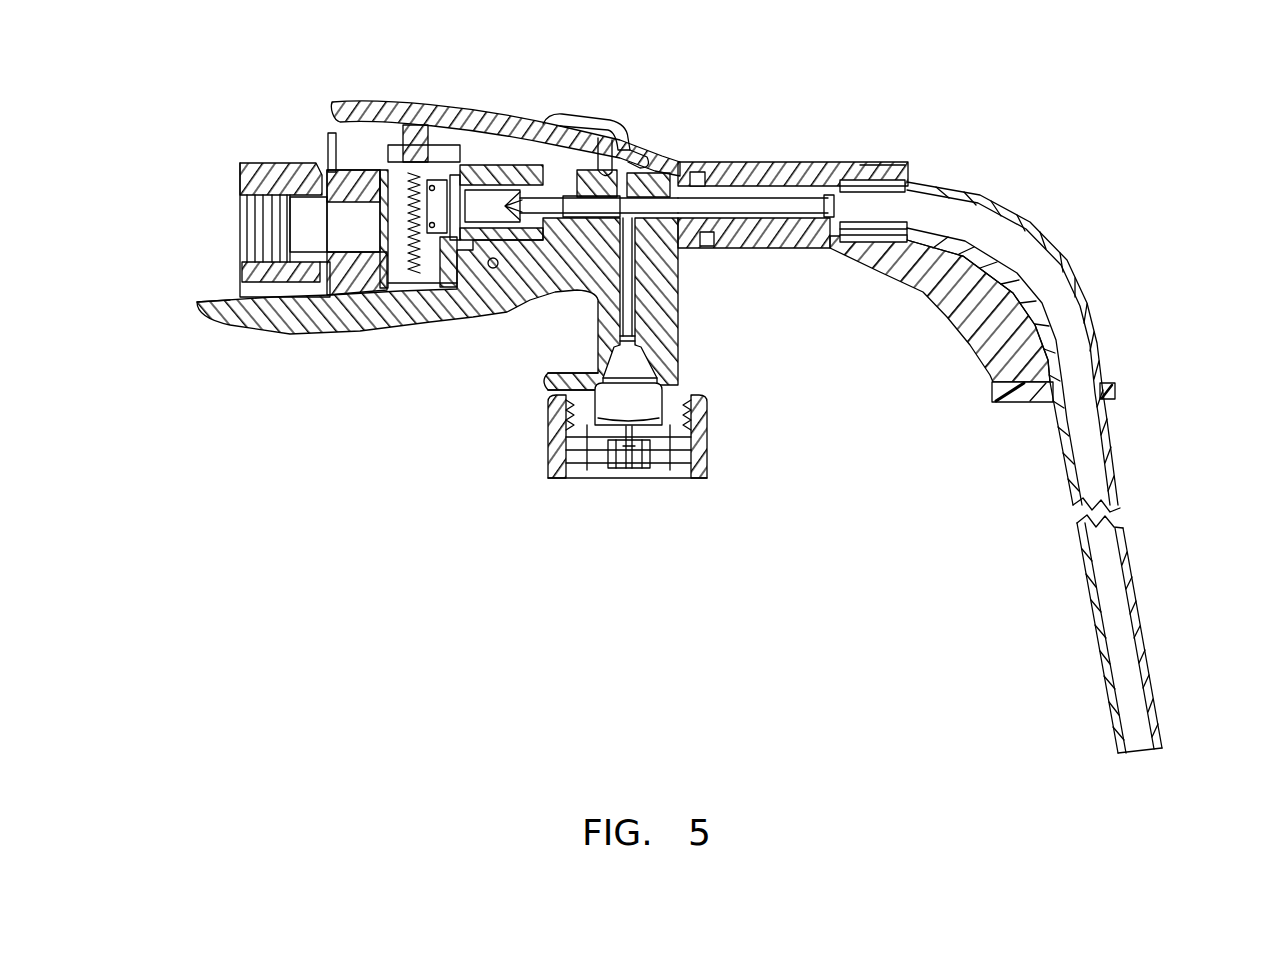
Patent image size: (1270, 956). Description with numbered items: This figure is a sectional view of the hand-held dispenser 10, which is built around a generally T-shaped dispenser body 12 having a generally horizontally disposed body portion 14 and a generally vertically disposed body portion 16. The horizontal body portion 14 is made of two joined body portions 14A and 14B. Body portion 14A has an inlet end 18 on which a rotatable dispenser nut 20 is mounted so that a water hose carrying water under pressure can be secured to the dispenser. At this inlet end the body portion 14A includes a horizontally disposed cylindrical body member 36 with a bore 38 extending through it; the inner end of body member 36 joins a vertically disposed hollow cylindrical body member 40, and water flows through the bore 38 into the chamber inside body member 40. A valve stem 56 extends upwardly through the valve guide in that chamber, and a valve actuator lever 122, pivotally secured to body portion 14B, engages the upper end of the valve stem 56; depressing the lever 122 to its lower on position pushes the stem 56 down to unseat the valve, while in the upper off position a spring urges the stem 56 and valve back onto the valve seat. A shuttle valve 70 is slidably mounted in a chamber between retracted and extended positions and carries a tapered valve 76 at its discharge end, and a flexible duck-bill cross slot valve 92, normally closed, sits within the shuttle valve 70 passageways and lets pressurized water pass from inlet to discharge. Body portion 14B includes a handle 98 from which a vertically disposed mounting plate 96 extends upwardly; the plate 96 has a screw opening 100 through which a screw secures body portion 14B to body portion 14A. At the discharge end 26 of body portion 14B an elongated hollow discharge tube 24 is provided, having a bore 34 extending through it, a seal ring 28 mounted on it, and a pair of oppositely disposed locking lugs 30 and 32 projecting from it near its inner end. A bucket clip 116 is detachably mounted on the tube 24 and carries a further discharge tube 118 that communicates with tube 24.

The hand-held dispenser 10 is at (742, 128).
The dispenser body 12 is at (485, 322).
The horizontally disposed body portion 14 is at (749, 155).
The body portion 14A is at (352, 165).
The body portion 14B is at (595, 271).
The vertically disposed body portion 16 is at (688, 354).
The inlet end 18 is at (225, 222).
The dispenser nut 20 is at (268, 160).
The discharge tube 24 is at (790, 248).
The discharge end 26 is at (945, 170).
The seal ring 28 is at (760, 175).
The locking lug 30 is at (696, 160).
The locking lug 32 is at (700, 237).
The bore or passageway 34 is at (907, 170).
The cylindrical body member 36 is at (345, 292).
The bore or passageway 38 is at (357, 270).
The hollow cylindrical body member 40 is at (452, 280).
The valve stem 56 is at (432, 150).
The shuttle valve 70 is at (488, 163).
The tapered valve 76 is at (578, 165).
The duck-bill cross slot valve 92 is at (508, 182).
The mounting plate 96 is at (510, 265).
The handle 98 is at (255, 325).
The screw opening 100 is at (520, 280).
The bucket clip 116 is at (860, 165).
The discharge tube 118 is at (1118, 468).
The valve actuator lever 122 is at (460, 98).